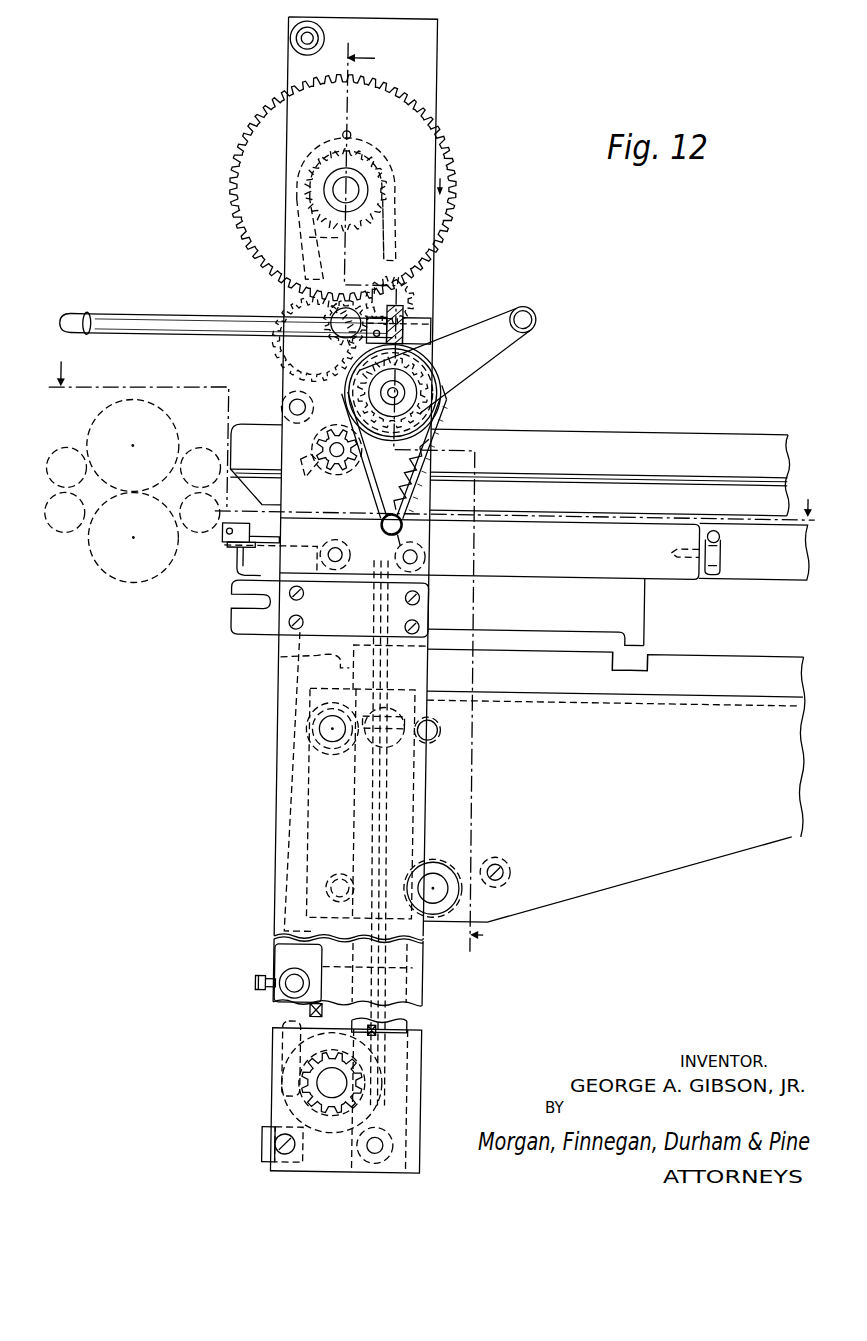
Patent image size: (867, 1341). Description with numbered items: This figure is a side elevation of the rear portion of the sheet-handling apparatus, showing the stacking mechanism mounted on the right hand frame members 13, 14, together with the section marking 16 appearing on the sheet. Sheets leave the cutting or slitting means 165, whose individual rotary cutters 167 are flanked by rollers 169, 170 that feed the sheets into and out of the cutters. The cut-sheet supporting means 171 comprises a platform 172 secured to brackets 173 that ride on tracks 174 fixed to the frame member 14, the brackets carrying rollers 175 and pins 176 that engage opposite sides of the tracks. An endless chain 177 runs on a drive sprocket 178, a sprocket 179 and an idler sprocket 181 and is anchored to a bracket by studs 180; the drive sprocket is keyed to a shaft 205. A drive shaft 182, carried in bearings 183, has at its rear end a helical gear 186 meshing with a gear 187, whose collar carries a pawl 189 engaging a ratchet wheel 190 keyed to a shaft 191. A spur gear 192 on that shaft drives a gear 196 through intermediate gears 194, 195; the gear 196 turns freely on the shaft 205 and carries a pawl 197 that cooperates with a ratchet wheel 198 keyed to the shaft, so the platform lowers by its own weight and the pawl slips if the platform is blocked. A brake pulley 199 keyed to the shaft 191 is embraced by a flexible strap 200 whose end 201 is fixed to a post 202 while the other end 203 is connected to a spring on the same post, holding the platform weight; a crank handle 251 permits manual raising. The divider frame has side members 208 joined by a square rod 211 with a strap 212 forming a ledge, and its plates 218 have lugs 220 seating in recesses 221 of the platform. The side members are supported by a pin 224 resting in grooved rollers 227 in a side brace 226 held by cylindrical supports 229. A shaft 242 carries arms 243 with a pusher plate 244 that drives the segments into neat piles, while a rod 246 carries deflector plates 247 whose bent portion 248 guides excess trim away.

The right hand frame member 13 is at (438, 498).
The frame member 14 is at (427, 54).
The section line 16- 16 is at (437, 440).
The cutting or slitting means 165 is at (149, 588).
The rotary cutters 167 is at (131, 406).
The roller 169 is at (66, 538).
The roller 170 is at (178, 520).
The cut-sheet supporting means 171 is at (717, 856).
The platform 172 is at (769, 665).
The brackets 173 is at (647, 856).
The tracks or rails 174 is at (415, 831).
The rollers 175 is at (307, 734).
The pins 176 is at (431, 736).
The endless chain 177 is at (386, 235).
The drive sprocket 178 is at (305, 238).
The sprocket 179 is at (320, 1053).
The studs 180 is at (374, 736).
The idler sprocket 181 is at (304, 480).
The drive shaft 182 is at (146, 320).
The bearings 183 is at (415, 319).
The helical gear 186 is at (400, 300).
The gear 187 is at (367, 378).
The pawl 189 is at (431, 362).
The ratchet wheel 190 is at (372, 400).
The shaft 191 is at (421, 422).
The spur gear 192 is at (441, 389).
The intermediate gear 194 is at (298, 300).
The intermediate gear 195 is at (290, 308).
The gear 196 is at (256, 133).
The pawl 197 is at (332, 133).
The ratchet wheel 198 is at (369, 151).
The brake pulley 199 is at (436, 411).
The flexible strap 200 is at (338, 461).
The end of strap 201 is at (401, 537).
The post 202 is at (383, 523).
The end of strap 203 is at (425, 442).
The shaft 205 is at (327, 190).
The side members 208 is at (269, 530).
The square rod 211 is at (227, 531).
The strap 212 is at (230, 549).
The plates 218 is at (552, 612).
The lugs 220 is at (646, 634).
The recesses 221 is at (628, 654).
The pin 224 is at (720, 527).
The side brace 226 is at (667, 565).
The grooved rollers 227 is at (715, 567).
The cylindrical supports 229 is at (337, 571).
The shaft 242 is at (298, 989).
The arms 243 is at (284, 764).
The pusher plate 244 is at (240, 569).
The rod 246 is at (286, 407).
The deflector plates 247 is at (242, 440).
The bent portion 248 is at (582, 490).
The crank handle 251 is at (501, 346).